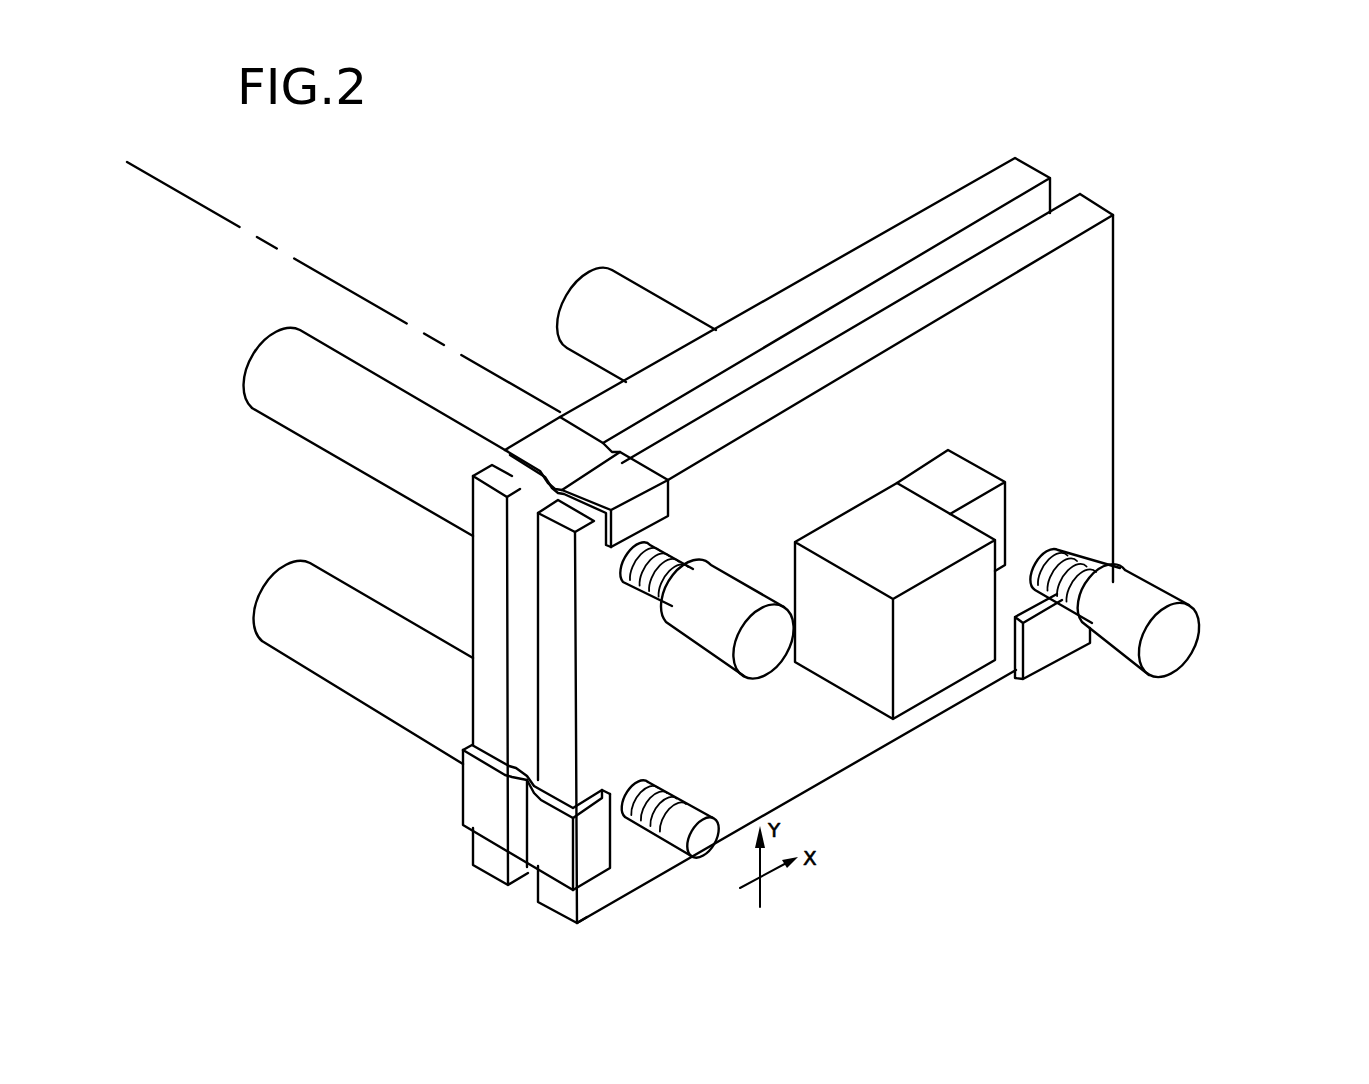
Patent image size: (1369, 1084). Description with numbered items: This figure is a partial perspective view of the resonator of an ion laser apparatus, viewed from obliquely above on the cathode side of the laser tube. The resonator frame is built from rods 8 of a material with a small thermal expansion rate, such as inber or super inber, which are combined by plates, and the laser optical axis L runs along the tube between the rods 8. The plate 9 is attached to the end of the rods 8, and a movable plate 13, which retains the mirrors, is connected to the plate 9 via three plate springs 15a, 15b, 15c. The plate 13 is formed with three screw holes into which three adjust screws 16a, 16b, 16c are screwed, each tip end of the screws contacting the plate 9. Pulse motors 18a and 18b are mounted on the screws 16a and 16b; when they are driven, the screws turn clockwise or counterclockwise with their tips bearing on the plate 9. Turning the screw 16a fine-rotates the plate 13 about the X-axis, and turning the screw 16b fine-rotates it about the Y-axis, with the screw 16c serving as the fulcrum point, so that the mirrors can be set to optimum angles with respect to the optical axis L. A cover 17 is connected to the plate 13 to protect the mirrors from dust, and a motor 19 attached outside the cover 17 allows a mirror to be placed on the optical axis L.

The rods 8 is at (640, 305).
The plate 9 is at (907, 237).
The movable plate 13 is at (1077, 290).
The plate spring 15a is at (540, 440).
The plate spring 15b is at (1050, 655).
The plate spring 15c is at (482, 805).
The adjust screw 16a is at (647, 590).
The adjust screw 16b is at (1082, 550).
The adjust screw 16c is at (673, 837).
The cover 17 is at (863, 667).
The motor 18a is at (762, 665).
The motor 18b is at (1194, 641).
The motor 19 is at (963, 478).
The laser optical axis L is at (337, 280).